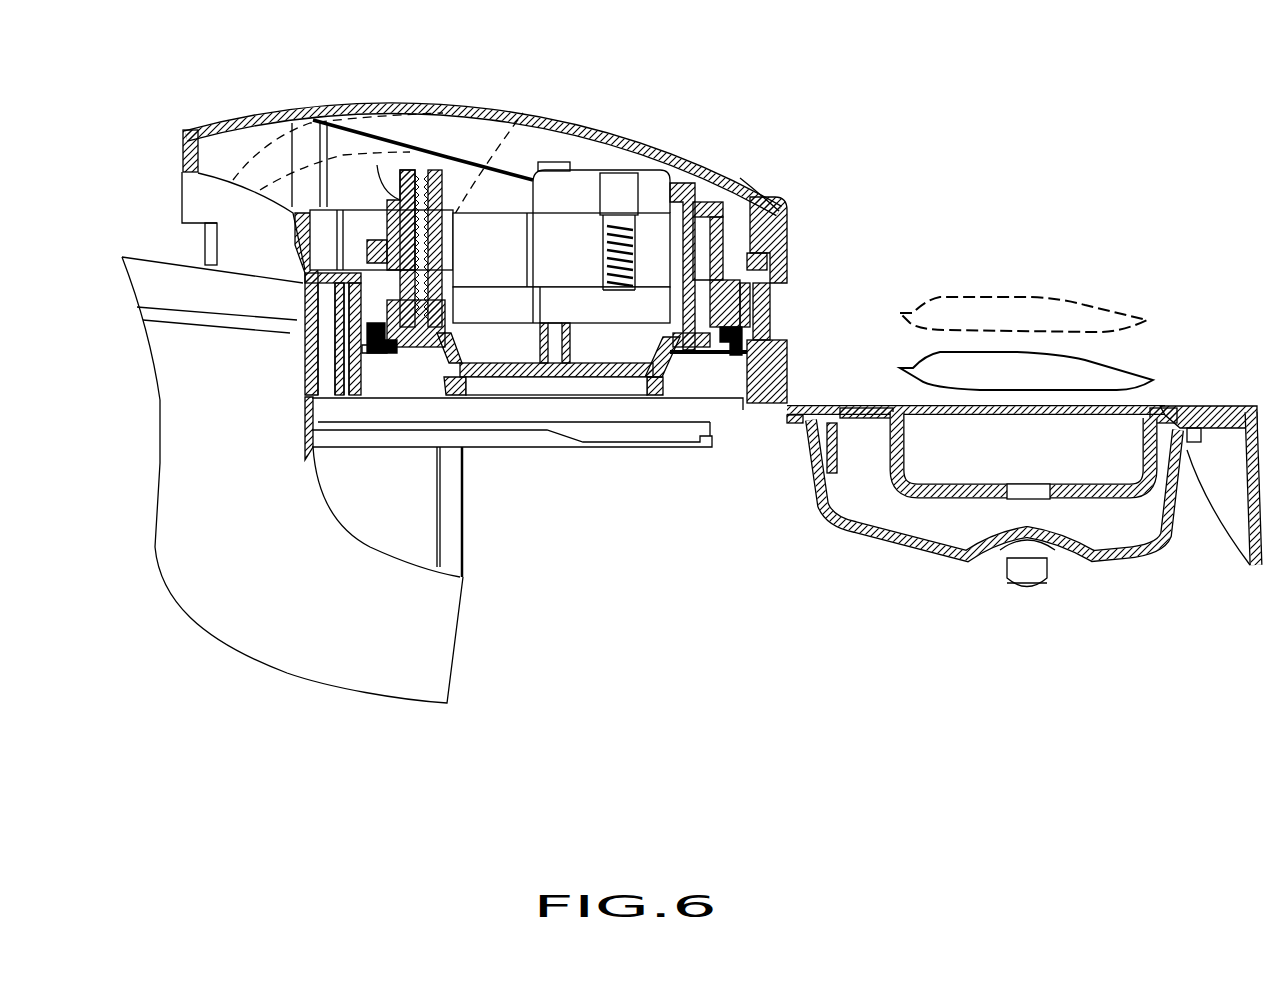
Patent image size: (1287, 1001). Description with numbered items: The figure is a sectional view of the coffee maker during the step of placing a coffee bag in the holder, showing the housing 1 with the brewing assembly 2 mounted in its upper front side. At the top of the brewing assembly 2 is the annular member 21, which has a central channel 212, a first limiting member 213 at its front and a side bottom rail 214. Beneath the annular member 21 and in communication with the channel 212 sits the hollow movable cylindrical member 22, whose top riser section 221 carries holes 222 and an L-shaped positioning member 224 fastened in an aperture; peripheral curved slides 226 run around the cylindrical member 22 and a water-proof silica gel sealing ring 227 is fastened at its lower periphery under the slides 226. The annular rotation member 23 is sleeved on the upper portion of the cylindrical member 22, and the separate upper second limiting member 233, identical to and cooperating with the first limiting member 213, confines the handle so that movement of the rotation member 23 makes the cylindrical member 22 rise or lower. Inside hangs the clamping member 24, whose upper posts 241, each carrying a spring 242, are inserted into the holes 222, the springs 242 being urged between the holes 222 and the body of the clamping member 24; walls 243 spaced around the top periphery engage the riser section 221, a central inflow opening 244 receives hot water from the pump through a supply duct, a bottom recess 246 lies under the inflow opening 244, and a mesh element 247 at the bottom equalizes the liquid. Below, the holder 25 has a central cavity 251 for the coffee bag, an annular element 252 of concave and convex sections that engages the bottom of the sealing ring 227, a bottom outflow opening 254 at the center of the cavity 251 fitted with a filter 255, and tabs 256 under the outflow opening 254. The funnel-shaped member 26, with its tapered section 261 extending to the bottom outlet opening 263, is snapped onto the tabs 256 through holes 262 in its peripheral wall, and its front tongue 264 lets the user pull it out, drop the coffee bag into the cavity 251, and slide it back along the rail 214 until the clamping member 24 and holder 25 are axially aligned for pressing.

The housing 1 is at (233, 423).
The brewing assembly 2 is at (703, 50).
The annular member 21 is at (780, 367).
The central channel 212 is at (683, 388).
The first limiting member 213 is at (770, 330).
The side bottom rail 214 is at (540, 413).
The movable cylindrical member 22 is at (770, 202).
The top riser section 221 is at (768, 178).
The holes 222 is at (383, 165).
The L-shaped positioning member 224 is at (553, 170).
The peripheral curved slides 226 is at (727, 240).
The water-proof silica gel sealing ring 227 is at (733, 365).
The annular rotation member 23 is at (770, 303).
The second limiting member 233 is at (765, 283).
The clamping member 24 is at (500, 385).
The upper posts 241 is at (427, 170).
The spring 242 is at (503, 195).
The walls 243 is at (475, 197).
The central inflow opening 244 is at (600, 385).
The bottom recess 246 is at (623, 332).
The mesh element 247 is at (520, 385).
The holder 25 is at (1123, 482).
The central cavity 251 is at (1047, 440).
The annular element 252 is at (1205, 407).
The bottom outflow opening 254 is at (1033, 490).
The filter 255 is at (975, 482).
The tabs 256 is at (850, 462).
The funnel-shaped member 26 is at (1090, 590).
The tapered section 261 is at (880, 467).
The holes 262 is at (812, 465).
The bottom outlet opening 263 is at (1030, 565).
The front tongue 264 is at (1227, 502).